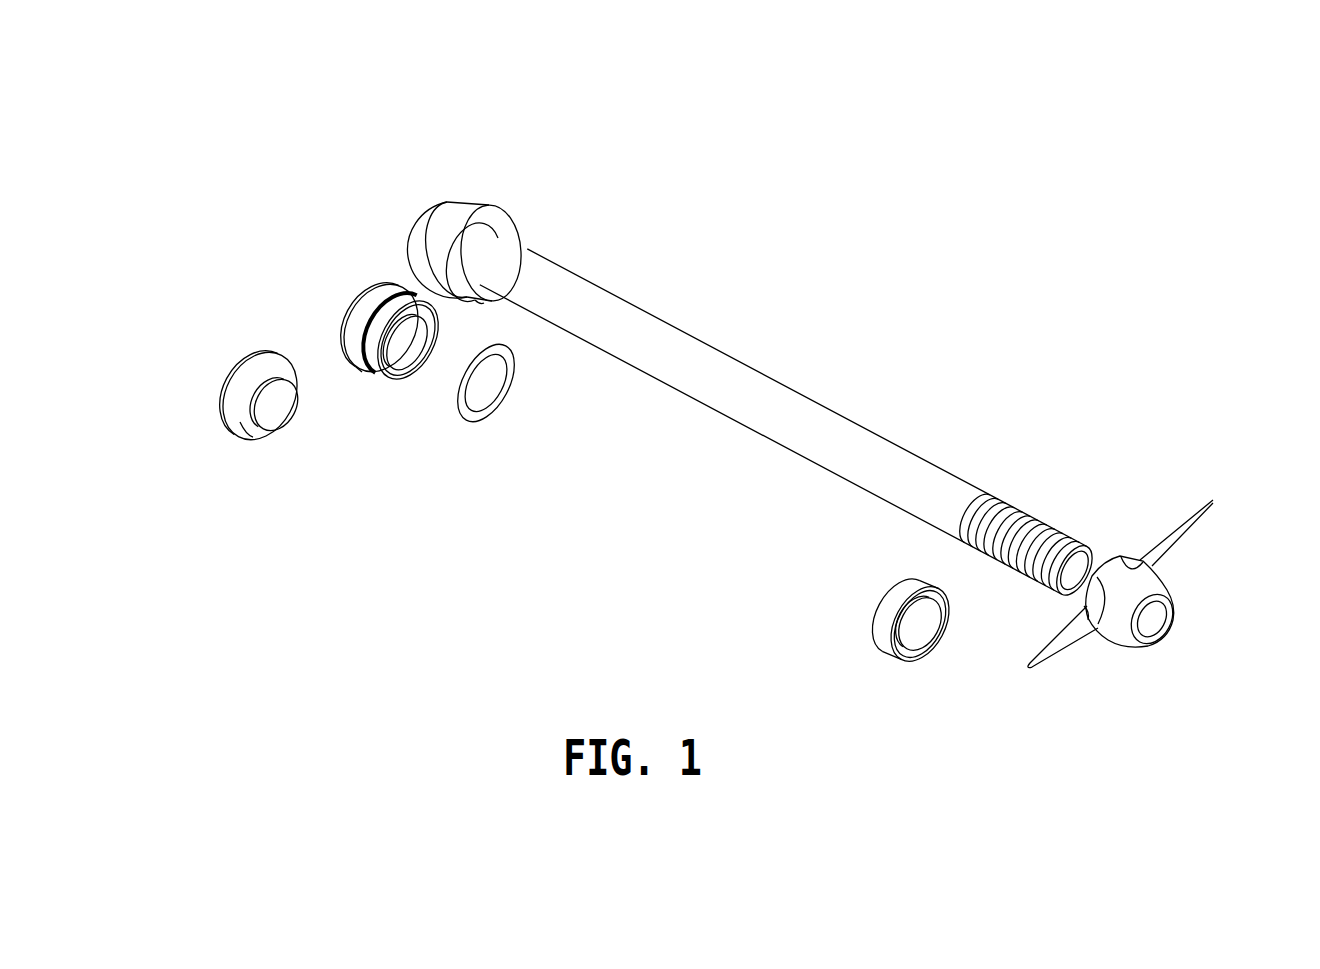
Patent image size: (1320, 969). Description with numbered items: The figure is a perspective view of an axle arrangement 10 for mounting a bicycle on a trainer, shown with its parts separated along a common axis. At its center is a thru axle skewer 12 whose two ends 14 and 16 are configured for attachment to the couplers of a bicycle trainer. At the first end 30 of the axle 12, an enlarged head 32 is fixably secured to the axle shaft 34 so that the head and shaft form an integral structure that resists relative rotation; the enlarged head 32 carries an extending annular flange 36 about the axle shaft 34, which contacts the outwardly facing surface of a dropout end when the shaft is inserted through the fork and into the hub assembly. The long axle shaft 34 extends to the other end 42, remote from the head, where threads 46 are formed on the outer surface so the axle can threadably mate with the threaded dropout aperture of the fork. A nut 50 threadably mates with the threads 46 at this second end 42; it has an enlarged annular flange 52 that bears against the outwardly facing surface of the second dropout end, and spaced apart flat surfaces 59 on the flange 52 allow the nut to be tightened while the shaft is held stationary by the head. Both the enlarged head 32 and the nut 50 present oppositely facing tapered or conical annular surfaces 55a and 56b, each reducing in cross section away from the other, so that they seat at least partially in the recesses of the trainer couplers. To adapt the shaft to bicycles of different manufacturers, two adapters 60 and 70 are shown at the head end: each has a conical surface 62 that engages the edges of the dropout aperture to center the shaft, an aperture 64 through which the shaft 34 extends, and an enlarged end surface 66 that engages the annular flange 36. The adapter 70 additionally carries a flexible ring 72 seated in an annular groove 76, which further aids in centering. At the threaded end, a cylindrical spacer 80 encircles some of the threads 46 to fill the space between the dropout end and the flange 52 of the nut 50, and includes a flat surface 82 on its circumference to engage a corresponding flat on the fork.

The axle arrangement 10 is at (910, 347).
The thru axle skewer 12 is at (565, 233).
The end 14 is at (422, 172).
The end 16 is at (1201, 604).
The first end 30 is at (504, 173).
The enlarged head 32 is at (480, 203).
The axle shaft 34 is at (526, 206).
The annular flange 36 is at (484, 305).
The other end 42 is at (1092, 572).
The threads 46 is at (1014, 518).
The nut 50 is at (1085, 655).
The annular flange 52 is at (1130, 562).
The conical annular surface 55a is at (449, 198).
The conical annular surface 56b is at (1158, 584).
The flat surfaces 59 is at (1020, 670).
The adapter 60 is at (218, 361).
The conical surface 62 is at (402, 378).
The aperture 64 is at (417, 282).
The enlarged end surface 66 is at (385, 287).
The adapter 70 is at (337, 315).
The flexible ring 72 is at (507, 400).
The annular groove 76 is at (375, 380).
The cylindrical spacer 80 is at (870, 656).
The flat surface 82 is at (946, 600).